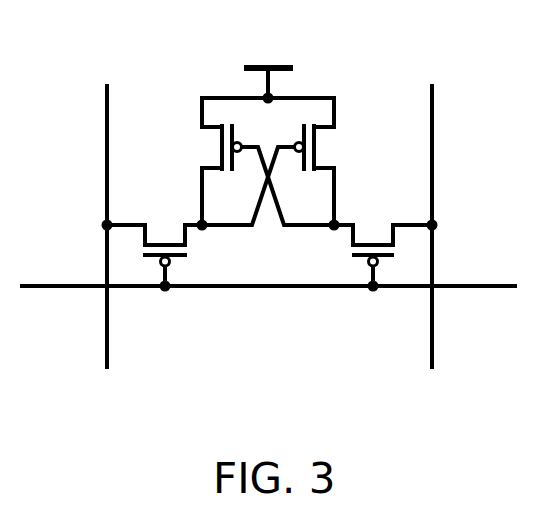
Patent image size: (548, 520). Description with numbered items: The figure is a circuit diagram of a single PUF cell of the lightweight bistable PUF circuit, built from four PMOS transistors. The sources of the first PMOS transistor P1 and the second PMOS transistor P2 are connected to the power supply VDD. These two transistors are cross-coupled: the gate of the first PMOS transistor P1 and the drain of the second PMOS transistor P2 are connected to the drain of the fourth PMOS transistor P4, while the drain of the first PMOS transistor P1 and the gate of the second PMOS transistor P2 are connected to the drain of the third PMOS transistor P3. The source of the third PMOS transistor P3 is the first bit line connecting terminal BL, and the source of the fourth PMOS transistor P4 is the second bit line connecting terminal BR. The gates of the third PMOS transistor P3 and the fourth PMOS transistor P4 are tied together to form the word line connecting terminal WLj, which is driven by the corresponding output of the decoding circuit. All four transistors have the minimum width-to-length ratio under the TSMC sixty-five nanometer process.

The first PMOS transistor P1 is at (239, 161).
The second PMOS transistor P2 is at (299, 161).
The third PMOS transistor P3 is at (155, 235).
The fourth PMOS transistor P4 is at (382, 236).
The power supply VDD is at (268, 61).
The first bit line connecting terminal BL is at (120, 252).
The second bit line connecting terminal BR is at (439, 252).
The word line connecting terminal WLj is at (268, 315).